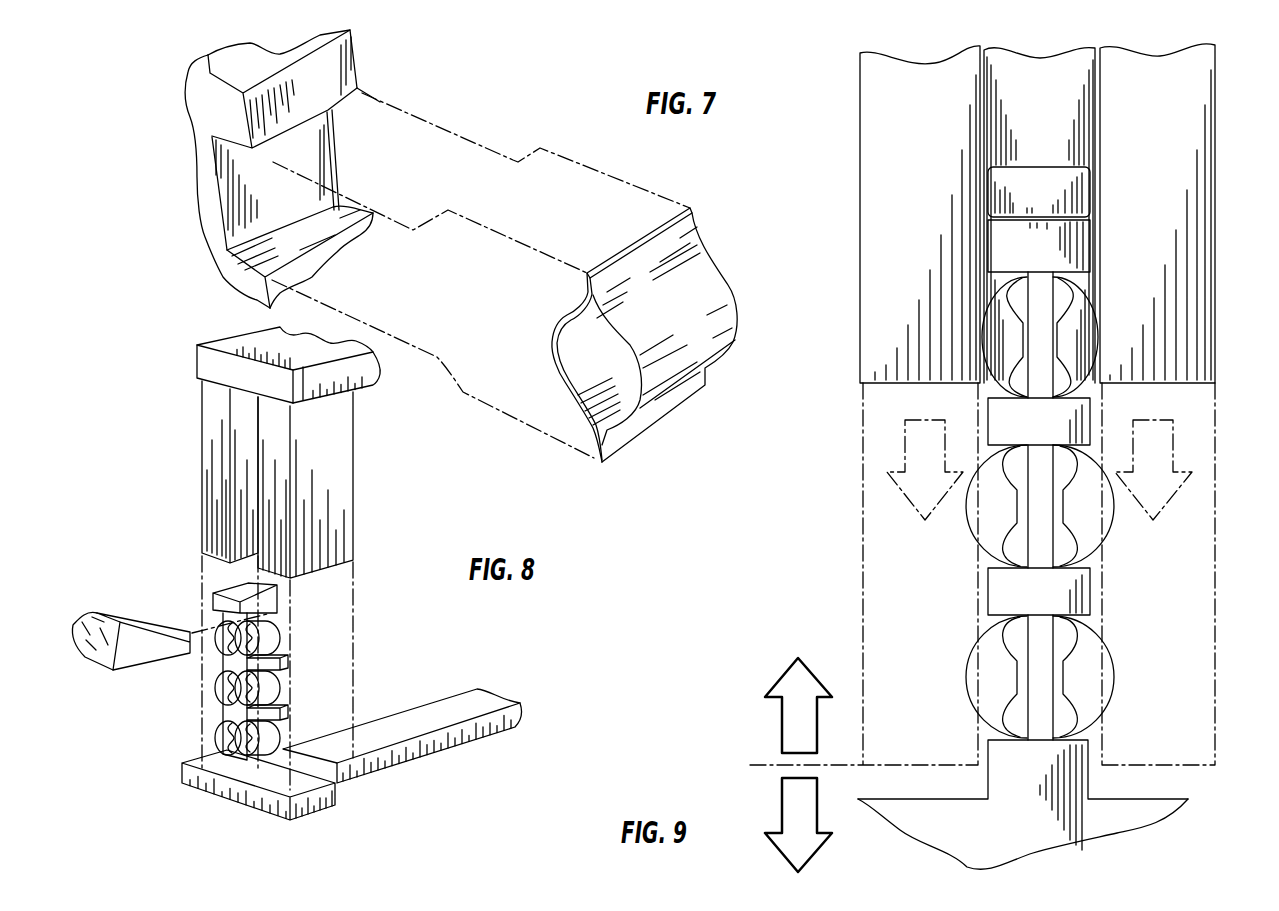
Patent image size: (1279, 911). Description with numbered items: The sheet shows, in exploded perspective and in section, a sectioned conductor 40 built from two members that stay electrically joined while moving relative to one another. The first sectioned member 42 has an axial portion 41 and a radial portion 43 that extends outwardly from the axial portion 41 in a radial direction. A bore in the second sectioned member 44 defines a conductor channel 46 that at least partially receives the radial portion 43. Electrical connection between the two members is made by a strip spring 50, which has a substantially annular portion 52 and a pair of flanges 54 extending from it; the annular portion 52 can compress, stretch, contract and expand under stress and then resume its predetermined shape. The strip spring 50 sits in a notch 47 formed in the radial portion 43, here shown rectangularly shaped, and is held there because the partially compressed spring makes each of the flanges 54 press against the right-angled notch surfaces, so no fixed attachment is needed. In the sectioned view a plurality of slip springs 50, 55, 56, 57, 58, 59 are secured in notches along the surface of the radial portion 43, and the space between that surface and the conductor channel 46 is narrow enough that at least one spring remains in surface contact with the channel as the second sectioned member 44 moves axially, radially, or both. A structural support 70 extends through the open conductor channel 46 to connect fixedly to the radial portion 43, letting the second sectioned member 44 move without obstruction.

In FIG. 8, the sectioned conductor 40 is at (143, 473).
In FIG. 8, the axial portion 41 is at (428, 745).
In FIG. 8, the first sectioned member 42 is at (353, 783).
In FIG. 8, the radial portion 43 is at (222, 717).
In FIG. 9, the radial portion 43 is at (1003, 588).
In FIG. 8, the second sectioned member 44 is at (200, 400).
In FIG. 9, the second sectioned member 44 is at (1215, 180).
In FIG. 8, the conductor channel 46 is at (250, 498).
In FIG. 9, the conductor channel 46 is at (1067, 130).
In FIG. 7, the notch 47 is at (333, 210).
In FIG. 7, the strip spring 50 is at (673, 335).
In FIG. 9, the strip spring 50 is at (1108, 648).
In FIG. 7, the substantially annular portion 52 is at (743, 293).
In FIG. 7, the pair of flanges 54 is at (687, 240).
In FIG. 9, the slip spring 55 is at (967, 682).
In FIG. 9, the slip spring 56 is at (1112, 517).
In FIG. 9, the slip spring 57 is at (967, 523).
In FIG. 9, the slip spring 58 is at (1080, 337).
In FIG. 9, the slip spring 59 is at (997, 345).
In FIG. 8, the structural support 70 is at (110, 613).